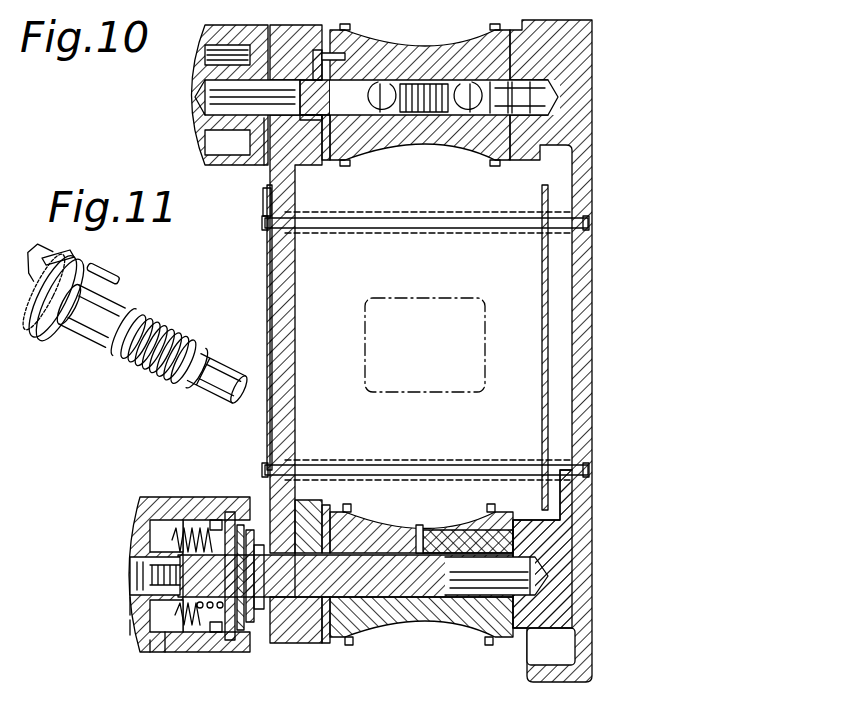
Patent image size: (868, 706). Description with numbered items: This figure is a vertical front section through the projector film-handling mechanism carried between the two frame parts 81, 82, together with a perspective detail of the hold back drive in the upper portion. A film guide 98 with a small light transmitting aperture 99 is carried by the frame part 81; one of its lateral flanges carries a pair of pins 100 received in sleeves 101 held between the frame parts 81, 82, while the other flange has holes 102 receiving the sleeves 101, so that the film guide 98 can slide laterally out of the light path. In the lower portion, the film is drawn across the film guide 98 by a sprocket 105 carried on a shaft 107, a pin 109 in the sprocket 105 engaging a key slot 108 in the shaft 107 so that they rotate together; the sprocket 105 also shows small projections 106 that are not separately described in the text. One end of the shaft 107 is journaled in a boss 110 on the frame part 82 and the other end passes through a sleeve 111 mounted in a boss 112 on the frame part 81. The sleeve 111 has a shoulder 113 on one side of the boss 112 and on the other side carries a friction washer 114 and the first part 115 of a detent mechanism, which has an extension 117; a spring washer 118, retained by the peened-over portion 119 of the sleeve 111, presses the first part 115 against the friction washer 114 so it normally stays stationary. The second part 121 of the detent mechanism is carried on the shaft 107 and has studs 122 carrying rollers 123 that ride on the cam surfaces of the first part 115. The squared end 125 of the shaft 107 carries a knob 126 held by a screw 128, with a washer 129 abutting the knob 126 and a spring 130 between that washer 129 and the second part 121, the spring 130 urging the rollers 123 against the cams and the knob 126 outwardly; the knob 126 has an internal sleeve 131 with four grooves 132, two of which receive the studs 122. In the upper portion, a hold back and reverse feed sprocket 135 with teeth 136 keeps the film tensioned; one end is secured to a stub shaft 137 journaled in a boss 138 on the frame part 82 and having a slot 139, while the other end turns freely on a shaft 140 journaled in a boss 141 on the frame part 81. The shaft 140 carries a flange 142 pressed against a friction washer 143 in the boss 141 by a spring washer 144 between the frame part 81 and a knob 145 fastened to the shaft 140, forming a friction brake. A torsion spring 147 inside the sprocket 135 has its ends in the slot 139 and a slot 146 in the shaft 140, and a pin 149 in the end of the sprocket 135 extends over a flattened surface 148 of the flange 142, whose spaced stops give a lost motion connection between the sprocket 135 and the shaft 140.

In FIG. 10, the frame part 81 is at (266, 200).
In FIG. 10, the frame part 82 is at (575, 174).
In FIG. 10, the film guide 98 is at (267, 290).
In FIG. 10, the light transmitting aperture 99 is at (410, 298).
In FIG. 10, the pins 100 is at (406, 226).
In FIG. 10, the sleeves 101 is at (437, 215).
In FIG. 10, the holes 102 is at (542, 230).
In FIG. 10, the sprocket 105 is at (400, 613).
In FIG. 10, the locating pin 106 is at (348, 504).
In FIG. 10, the shaft 107 is at (460, 600).
In FIG. 10, the key slot 108 is at (370, 553).
In FIG. 10, the pin 109 is at (420, 530).
In FIG. 10, the boss 110 is at (555, 549).
In FIG. 10, the sleeve 111 is at (326, 643).
In FIG. 10, the boss 112 is at (316, 508).
In FIG. 10, the shoulder 113 is at (338, 598).
In FIG. 10, the friction washer 114 is at (280, 643).
In FIG. 10, the first part of detent mechanism 115 is at (294, 645).
In FIG. 10, the extension 117 is at (258, 530).
In FIG. 10, the spring washer 118 is at (252, 625).
In FIG. 10, the peened-over portion 119 is at (222, 602).
In FIG. 10, the second part of detent mechanism 121 is at (200, 540).
In FIG. 10, the studs 122 is at (232, 515).
In FIG. 10, the cam followers or rollers 123 is at (232, 525).
In FIG. 10, the squared end of shaft 125 is at (145, 600).
In FIG. 10, the knob 126 is at (140, 620).
In FIG. 10, the screw 128 is at (135, 582).
In FIG. 10, the washer 129 is at (150, 648).
In FIG. 10, the spring 130 is at (170, 640).
In FIG. 10, the internal sleeve 131 is at (185, 505).
In FIG. 10, the grooves 132 is at (225, 518).
In FIG. 10, the hold back and reverse feed sprocket 135 is at (424, 52).
In FIG. 10, the teeth 136 is at (348, 28).
In FIG. 10, the stub shaft 137 is at (510, 80).
In FIG. 11, the stub shaft 137 is at (212, 416).
In FIG. 10, the boss 138 is at (550, 95).
In FIG. 10, the slot 139 is at (470, 112).
In FIG. 11, the slot 139 is at (186, 393).
In FIG. 10, the shaft 140 is at (215, 90).
In FIG. 11, the shaft 140 is at (78, 349).
In FIG. 10, the boss 141 is at (292, 40).
In FIG. 10, the flange 142 is at (326, 150).
In FIG. 11, the flange 142 is at (59, 330).
In FIG. 10, the friction washer 143 is at (312, 122).
In FIG. 11, the friction washer 143 is at (45, 312).
In FIG. 10, the spring washer 144 is at (262, 130).
In FIG. 10, the knob 145 is at (192, 118).
In FIG. 10, the slot 146 is at (380, 112).
In FIG. 11, the slot 146 is at (120, 304).
In FIG. 10, the torsion spring 147 is at (426, 112).
In FIG. 11, the torsion spring 147 is at (144, 377).
In FIG. 11, the flattened surface 148 is at (62, 250).
In FIG. 10, the pin 149 is at (335, 53).
In FIG. 11, the pin 149 is at (132, 264).